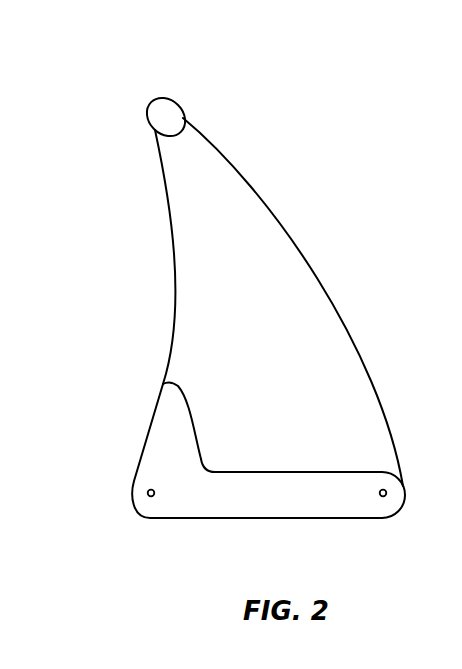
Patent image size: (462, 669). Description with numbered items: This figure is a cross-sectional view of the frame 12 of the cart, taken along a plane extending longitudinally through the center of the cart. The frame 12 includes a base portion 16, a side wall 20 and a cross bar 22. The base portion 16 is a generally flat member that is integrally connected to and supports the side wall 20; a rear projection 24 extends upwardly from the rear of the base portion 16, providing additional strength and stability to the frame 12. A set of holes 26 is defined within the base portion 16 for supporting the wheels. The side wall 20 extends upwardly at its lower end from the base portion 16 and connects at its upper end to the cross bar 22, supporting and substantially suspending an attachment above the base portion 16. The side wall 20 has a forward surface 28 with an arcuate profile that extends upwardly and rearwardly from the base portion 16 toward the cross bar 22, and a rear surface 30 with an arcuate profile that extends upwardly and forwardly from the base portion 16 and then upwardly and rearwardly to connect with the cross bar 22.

The frame 12 is at (93, 66).
The base portion 16 is at (236, 505).
The second side wall 20 is at (230, 192).
The cross bar 22 is at (171, 116).
The rear projection 24 is at (163, 423).
The set of holes 26 is at (399, 494).
The forward surface 28 is at (296, 238).
The rear surface 30 is at (168, 234).